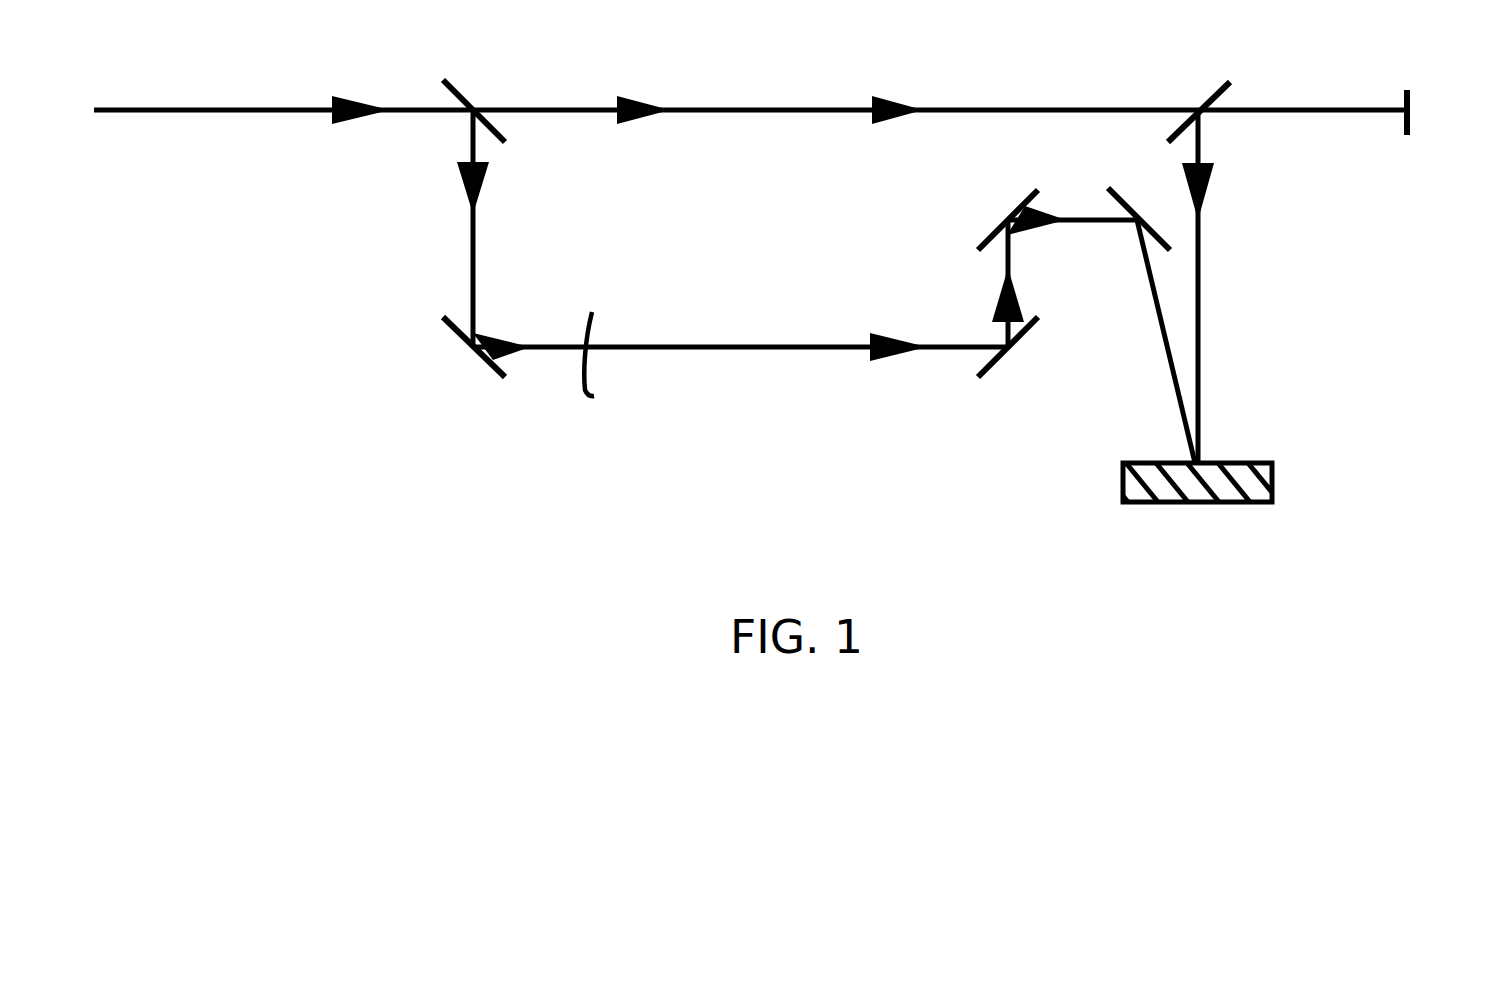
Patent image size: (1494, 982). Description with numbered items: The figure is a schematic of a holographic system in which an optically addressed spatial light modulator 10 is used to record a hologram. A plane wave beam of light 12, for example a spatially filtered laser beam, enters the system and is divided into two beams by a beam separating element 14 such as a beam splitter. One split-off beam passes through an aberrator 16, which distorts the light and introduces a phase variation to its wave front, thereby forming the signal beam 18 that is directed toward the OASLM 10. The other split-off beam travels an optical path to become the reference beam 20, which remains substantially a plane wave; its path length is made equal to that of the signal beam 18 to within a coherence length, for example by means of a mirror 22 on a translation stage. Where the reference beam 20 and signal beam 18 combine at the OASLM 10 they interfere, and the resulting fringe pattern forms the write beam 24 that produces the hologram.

The optically addressed spatial light modulator 10 is at (1198, 509).
The plane wave beam of light 12 is at (283, 85).
The beam separating element 14 is at (512, 140).
The aberrator 16 is at (635, 397).
The signal beam 18 is at (740, 322).
The reference beam 20 is at (940, 86).
The mirror 22 is at (1405, 91).
The write beam 24 is at (1308, 341).